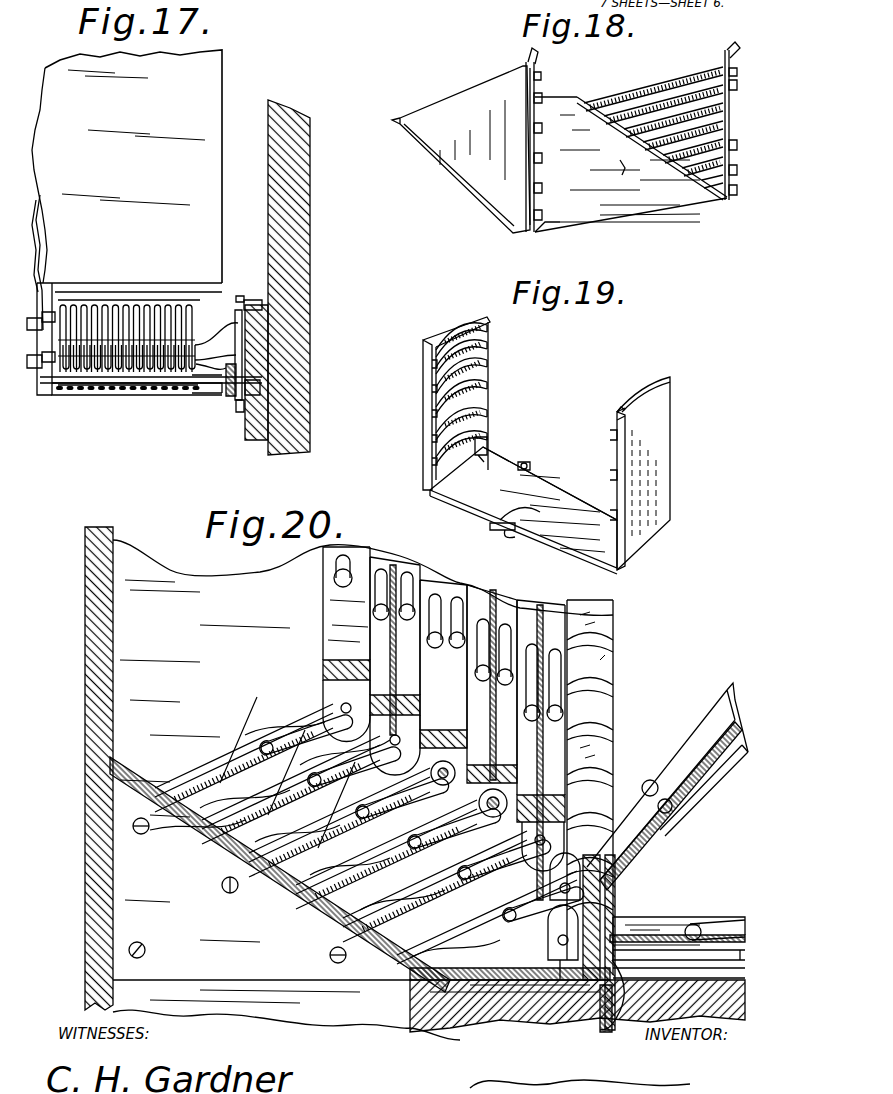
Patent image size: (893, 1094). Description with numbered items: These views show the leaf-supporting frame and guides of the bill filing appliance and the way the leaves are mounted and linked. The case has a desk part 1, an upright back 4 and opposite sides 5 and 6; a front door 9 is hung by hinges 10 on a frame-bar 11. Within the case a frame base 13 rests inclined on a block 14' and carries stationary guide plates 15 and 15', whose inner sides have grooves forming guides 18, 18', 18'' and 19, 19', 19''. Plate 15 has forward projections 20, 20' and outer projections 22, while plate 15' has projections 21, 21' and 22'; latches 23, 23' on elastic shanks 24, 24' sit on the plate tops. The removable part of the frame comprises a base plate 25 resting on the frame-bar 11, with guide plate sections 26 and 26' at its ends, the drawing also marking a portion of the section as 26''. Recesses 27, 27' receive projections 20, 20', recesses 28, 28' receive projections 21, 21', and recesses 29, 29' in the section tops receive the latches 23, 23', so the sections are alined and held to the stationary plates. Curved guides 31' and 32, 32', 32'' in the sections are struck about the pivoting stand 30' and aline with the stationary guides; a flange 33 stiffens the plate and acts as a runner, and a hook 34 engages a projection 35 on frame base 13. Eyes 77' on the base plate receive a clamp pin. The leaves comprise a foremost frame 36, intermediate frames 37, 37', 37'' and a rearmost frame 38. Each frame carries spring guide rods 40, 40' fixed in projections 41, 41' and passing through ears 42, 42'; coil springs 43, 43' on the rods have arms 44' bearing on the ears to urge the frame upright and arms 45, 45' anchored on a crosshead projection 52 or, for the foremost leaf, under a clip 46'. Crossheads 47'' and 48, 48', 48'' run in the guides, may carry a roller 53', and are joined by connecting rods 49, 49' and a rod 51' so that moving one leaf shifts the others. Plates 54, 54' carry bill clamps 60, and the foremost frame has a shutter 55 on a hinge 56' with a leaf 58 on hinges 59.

In FIG. 20, the desk part 1 is at (288, 1020).
In FIG. 20, the upright back 4 is at (85, 648).
In FIG. 17, the side 5 is at (310, 226).
In FIG. 20, the side 6 is at (205, 590).
In FIG. 20, the front door 9 is at (745, 1008).
In FIG. 20, the hinges 10 is at (608, 1035).
In FIG. 20, the frame-bar 11 is at (485, 1030).
In FIG. 18, the frame base 13 is at (650, 210).
In FIG. 20, the frame base 13 is at (215, 840).
In FIG. 20, the block 14' is at (227, 899).
In FIG. 17, the guide plate 15 is at (294, 372).
In FIG. 18, the guide plate 15 is at (461, 149).
In FIG. 18, the guide plate 15' is at (750, 125).
In FIG. 20, the guide plate 15' is at (285, 776).
In FIG. 18, the guide 18 is at (569, 232).
In FIG. 18, the guide 18' is at (556, 163).
In FIG. 17, the guide 18'' is at (290, 355).
In FIG. 18, the guide 18'' is at (558, 89).
In FIG. 18, the guide 19 is at (751, 191).
In FIG. 20, the guide 19 is at (435, 905).
In FIG. 18, the guide 19' is at (661, 145).
In FIG. 20, the guide 19' is at (337, 841).
In FIG. 18, the guide 19'' is at (653, 92).
In FIG. 20, the guide 19'' is at (232, 758).
In FIG. 18, the projection 20 is at (505, 211).
In FIG. 18, the projection 20' is at (502, 147).
In FIG. 18, the projection 21 is at (751, 171).
In FIG. 20, the projection 21 is at (374, 868).
In FIG. 18, the projection 21' is at (754, 85).
In FIG. 18, the projection 22 is at (487, 163).
In FIG. 18, the projection 22' is at (752, 147).
In FIG. 18, the latch 23 is at (559, 67).
In FIG. 18, the latch 23' is at (750, 65).
In FIG. 18, the elastic shank 24 is at (518, 50).
In FIG. 18, the elastic shank 24' is at (717, 45).
In FIG. 19, the base plate 25 is at (568, 487).
In FIG. 20, the base plate 25 is at (450, 1000).
In FIG. 19, the guide plate section 26 is at (668, 473).
In FIG. 20, the guide plate section 26' is at (615, 780).
In FIG. 19, the curved arm 26'' is at (449, 325).
In FIG. 19, the recess 27 is at (586, 503).
In FIG. 19, the recess 27' is at (593, 418).
In FIG. 19, the recess 28 is at (436, 403).
In FIG. 19, the recess 28' is at (433, 396).
In FIG. 19, the recess 29 is at (608, 390).
In FIG. 19, the recess 29' is at (436, 346).
In FIG. 19, the pivoting stand 30' is at (505, 442).
In FIG. 19, the guide 31' is at (550, 483).
In FIG. 19, the guide 32 is at (488, 428).
In FIG. 20, the guide 32 is at (626, 942).
In FIG. 19, the guide 32' is at (487, 391).
In FIG. 20, the guide 32' is at (615, 756).
In FIG. 19, the guide 32'' is at (489, 358).
In FIG. 20, the guide 32'' is at (623, 636).
In FIG. 19, the up-turned flange 33 is at (470, 510).
In FIG. 20, the up-turned flange 33 is at (405, 1003).
In FIG. 19, the hook 34 is at (500, 532).
In FIG. 18, the projection 35 is at (618, 170).
In FIG. 20, the frame 36 is at (745, 927).
In FIG. 20, the intermediate frame 37 is at (750, 717).
In FIG. 20, the intermediate frame 37' is at (492, 692).
In FIG. 17, the intermediate frame 37'' is at (23, 262).
In FIG. 20, the intermediate frame 37'' is at (411, 633).
In FIG. 17, the rearmost frame 38 is at (222, 90).
In FIG. 20, the rearmost frame 38 is at (345, 622).
In FIG. 17, the spring guide 40 is at (63, 331).
In FIG. 20, the spring guide 40' is at (453, 820).
In FIG. 17, the projection 41 is at (137, 411).
In FIG. 20, the projection 41' is at (704, 755).
In FIG. 17, the ear 42 is at (34, 379).
In FIG. 20, the ear 42' is at (351, 666).
In FIG. 17, the coil spring 43 is at (126, 341).
In FIG. 20, the coil spring 43' is at (661, 765).
In FIG. 20, the arm 44' is at (584, 750).
In FIG. 17, the arm 45 is at (224, 313).
In FIG. 20, the arm 45' is at (340, 859).
In FIG. 20, the clip 46' is at (406, 1047).
In FIG. 17, the crosshead 47'' is at (278, 369).
In FIG. 20, the crosshead 48 is at (322, 876).
In FIG. 20, the crosshead 48' is at (197, 867).
In FIG. 20, the crosshead 48'' is at (261, 716).
In FIG. 17, the connecting rod 49 is at (223, 398).
In FIG. 20, the connecting rod 49' is at (604, 906).
In FIG. 17, the rod 51' is at (151, 415).
In FIG. 20, the rod 51' is at (429, 923).
In FIG. 17, the projection 52 is at (262, 302).
In FIG. 20, the projection 52 is at (330, 820).
In FIG. 17, the roller 53' is at (293, 394).
In FIG. 20, the plate 54 is at (687, 826).
In FIG. 20, the plate 54' is at (312, 576).
In FIG. 20, the shutter 55 is at (745, 973).
In FIG. 20, the hinge 56' is at (635, 1010).
In FIG. 20, the leaf 58 is at (745, 955).
In FIG. 20, the hinges 59 is at (565, 985).
In FIG. 20, the bill clamp 60 is at (728, 920).
In FIG. 19, the eye 77' is at (537, 452).